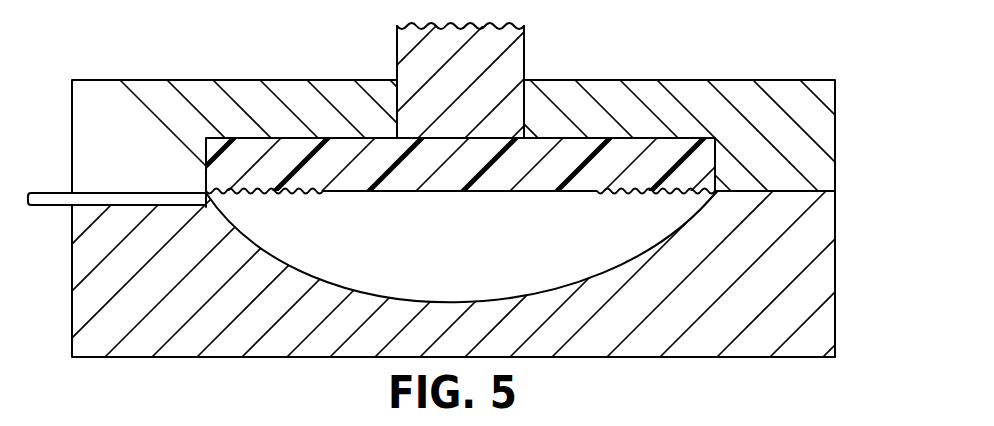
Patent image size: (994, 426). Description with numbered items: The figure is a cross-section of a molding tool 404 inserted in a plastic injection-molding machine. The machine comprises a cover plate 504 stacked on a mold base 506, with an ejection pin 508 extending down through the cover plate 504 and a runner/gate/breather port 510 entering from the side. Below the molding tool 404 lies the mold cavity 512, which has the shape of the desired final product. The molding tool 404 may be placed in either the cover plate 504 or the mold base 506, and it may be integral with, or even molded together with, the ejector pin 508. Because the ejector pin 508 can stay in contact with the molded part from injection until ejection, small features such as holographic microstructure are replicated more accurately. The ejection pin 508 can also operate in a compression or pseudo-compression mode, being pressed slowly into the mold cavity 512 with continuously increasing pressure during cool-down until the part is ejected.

The molding tool 404 is at (707, 159).
The cover plate 504 is at (828, 122).
The mold base 506 is at (828, 309).
The ejection pin 508 is at (512, 62).
The runner/gate/breather port 510 is at (62, 205).
The mold cavity 512 is at (462, 242).